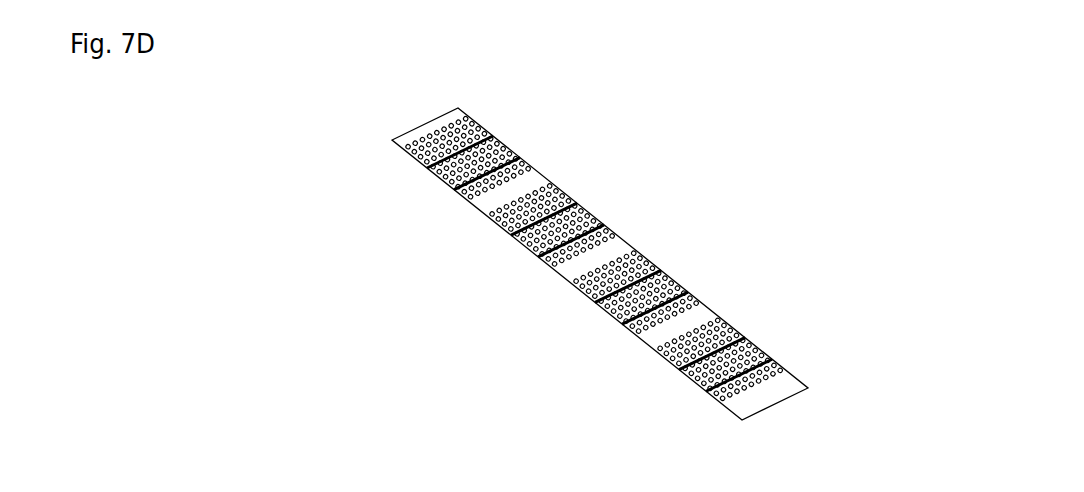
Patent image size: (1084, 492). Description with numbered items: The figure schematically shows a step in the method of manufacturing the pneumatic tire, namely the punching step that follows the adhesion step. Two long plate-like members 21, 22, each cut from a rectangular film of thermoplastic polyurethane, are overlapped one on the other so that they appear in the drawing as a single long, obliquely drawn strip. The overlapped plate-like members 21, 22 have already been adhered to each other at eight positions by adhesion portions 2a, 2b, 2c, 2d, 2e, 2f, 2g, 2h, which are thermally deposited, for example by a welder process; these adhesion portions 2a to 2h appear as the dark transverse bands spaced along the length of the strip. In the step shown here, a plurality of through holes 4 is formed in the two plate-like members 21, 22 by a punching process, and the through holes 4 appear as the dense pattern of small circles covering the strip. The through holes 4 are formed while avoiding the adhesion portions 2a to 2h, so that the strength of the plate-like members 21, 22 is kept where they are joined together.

The adhesion portion 2a is at (485, 129).
The adhesion portion 2b is at (510, 150).
The adhesion portion 2c is at (568, 196).
The adhesion portion 2d is at (590, 220).
The adhesion portion 2e is at (653, 265).
The adhesion portion 2f is at (676, 286).
The adhesion portion 2g is at (737, 333).
The adhesion portion 2h is at (758, 353).
The through hole 4 is at (615, 318).
The plate-like member 21 is at (647, 273).
The plate-like member 22 is at (777, 404).